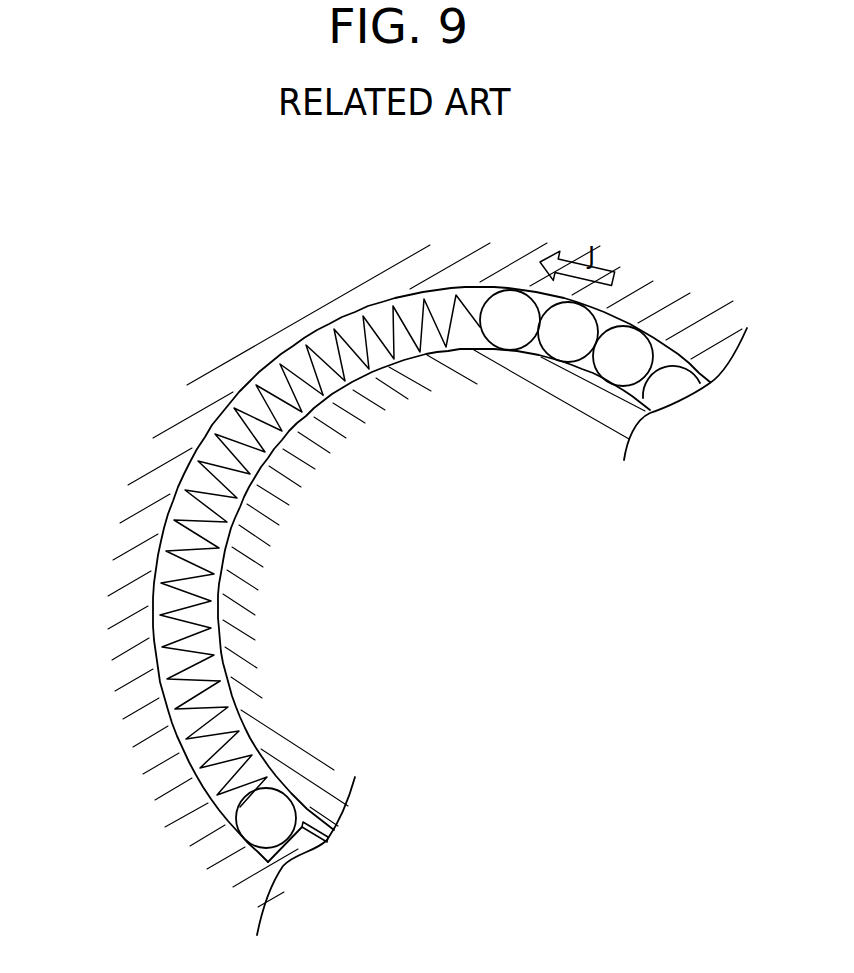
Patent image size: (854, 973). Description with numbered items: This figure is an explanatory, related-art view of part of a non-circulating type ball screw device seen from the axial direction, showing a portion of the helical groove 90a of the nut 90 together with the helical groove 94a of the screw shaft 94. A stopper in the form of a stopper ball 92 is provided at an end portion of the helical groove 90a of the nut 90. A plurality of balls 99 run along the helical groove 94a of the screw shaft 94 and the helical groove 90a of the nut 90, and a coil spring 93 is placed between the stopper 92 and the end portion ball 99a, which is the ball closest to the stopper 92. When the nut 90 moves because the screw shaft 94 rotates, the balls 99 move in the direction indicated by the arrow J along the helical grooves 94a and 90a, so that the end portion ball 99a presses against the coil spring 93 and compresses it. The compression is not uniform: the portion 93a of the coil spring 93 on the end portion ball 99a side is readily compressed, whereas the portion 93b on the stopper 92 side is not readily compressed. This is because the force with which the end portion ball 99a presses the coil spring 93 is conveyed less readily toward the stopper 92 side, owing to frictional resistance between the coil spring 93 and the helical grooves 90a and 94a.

The nut 90 is at (397, 589).
The helical groove of the nut 90a is at (176, 714).
The stopper 92 is at (240, 835).
The coil spring 93 is at (279, 514).
The portion of the coil spring at the end portion ball side 93a is at (342, 322).
The portion of the coil spring at the stopper side 93b is at (194, 763).
The screw shaft 94 is at (434, 589).
The helical groove of the screw shaft 94a is at (244, 500).
The balls 99 is at (590, 295).
The end portion ball 99a is at (509, 308).